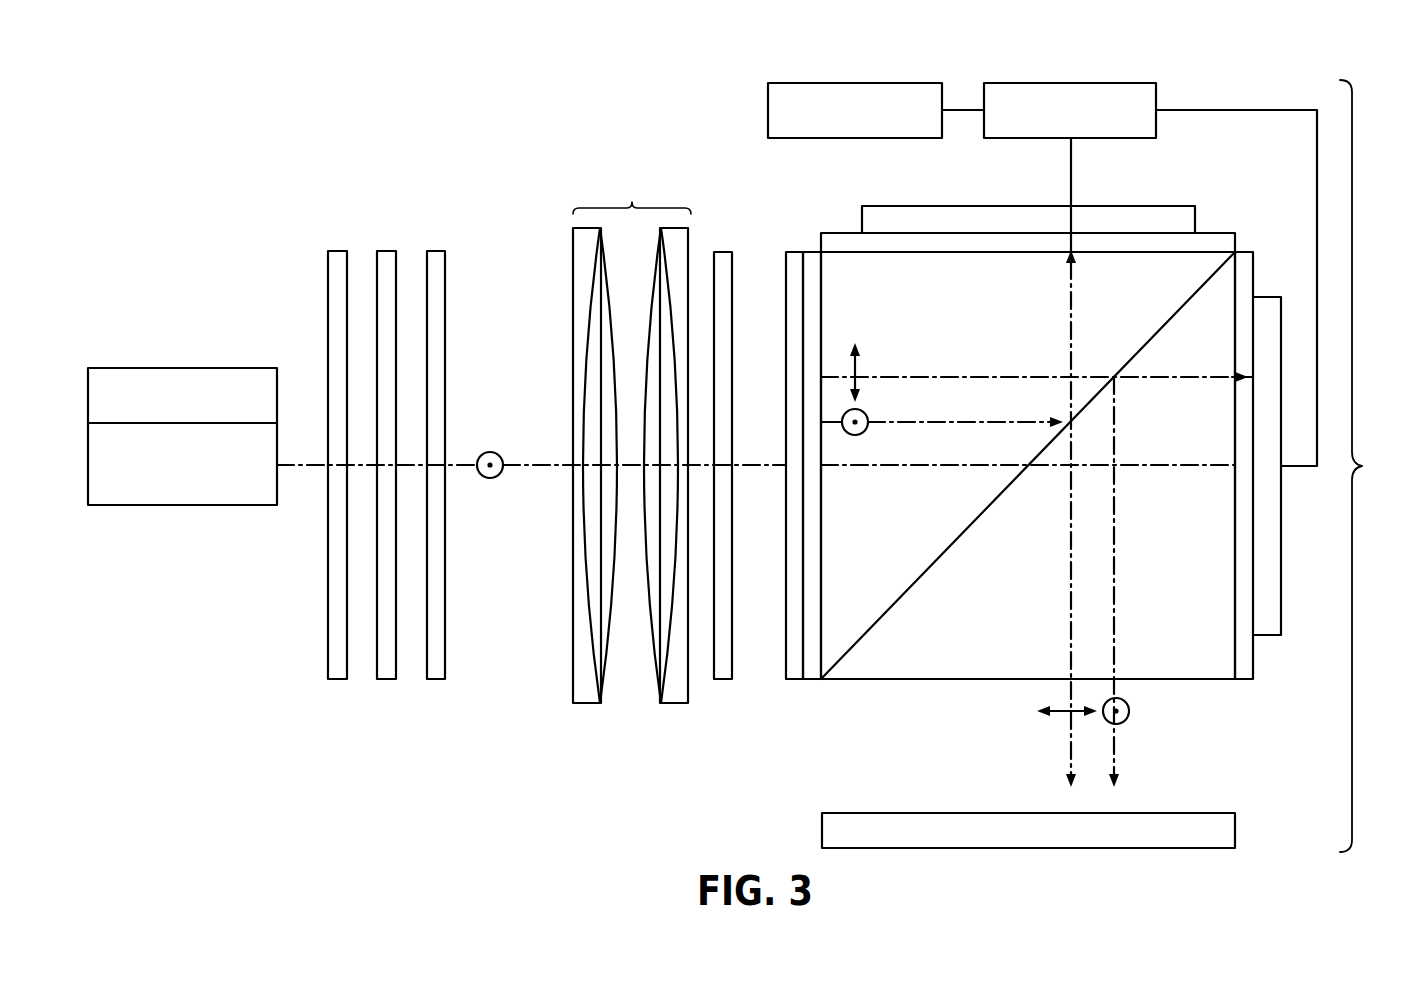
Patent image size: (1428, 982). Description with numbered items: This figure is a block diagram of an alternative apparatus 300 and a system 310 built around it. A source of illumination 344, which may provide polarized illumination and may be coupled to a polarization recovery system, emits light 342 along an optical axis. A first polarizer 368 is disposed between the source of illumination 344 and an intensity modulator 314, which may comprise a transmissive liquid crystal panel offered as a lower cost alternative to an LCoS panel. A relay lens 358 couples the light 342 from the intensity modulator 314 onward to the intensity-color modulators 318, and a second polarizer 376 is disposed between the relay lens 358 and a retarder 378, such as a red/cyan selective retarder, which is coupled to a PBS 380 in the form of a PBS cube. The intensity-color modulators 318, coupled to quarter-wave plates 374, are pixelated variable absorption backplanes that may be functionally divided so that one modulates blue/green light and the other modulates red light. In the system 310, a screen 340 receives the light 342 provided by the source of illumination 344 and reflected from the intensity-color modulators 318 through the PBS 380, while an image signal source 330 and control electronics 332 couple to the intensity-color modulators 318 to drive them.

The apparatus 300 is at (1254, 85).
The system 310 is at (1363, 466).
The intensity modulator 314 is at (388, 251).
The intensity-color modulators 318 is at (1140, 205).
The image signal source 330 is at (858, 83).
The control electronics 332 is at (1073, 83).
The screen 340 is at (1237, 830).
The light 342 is at (533, 465).
The source of illumination 344 is at (186, 368).
The relay lens 358 is at (633, 198).
The first polarizer 368 is at (338, 251).
The quarter-wave plates 374 is at (839, 232).
The second polarizer 376 is at (437, 251).
The retarder 378 is at (802, 684).
The PBS 380 is at (964, 684).